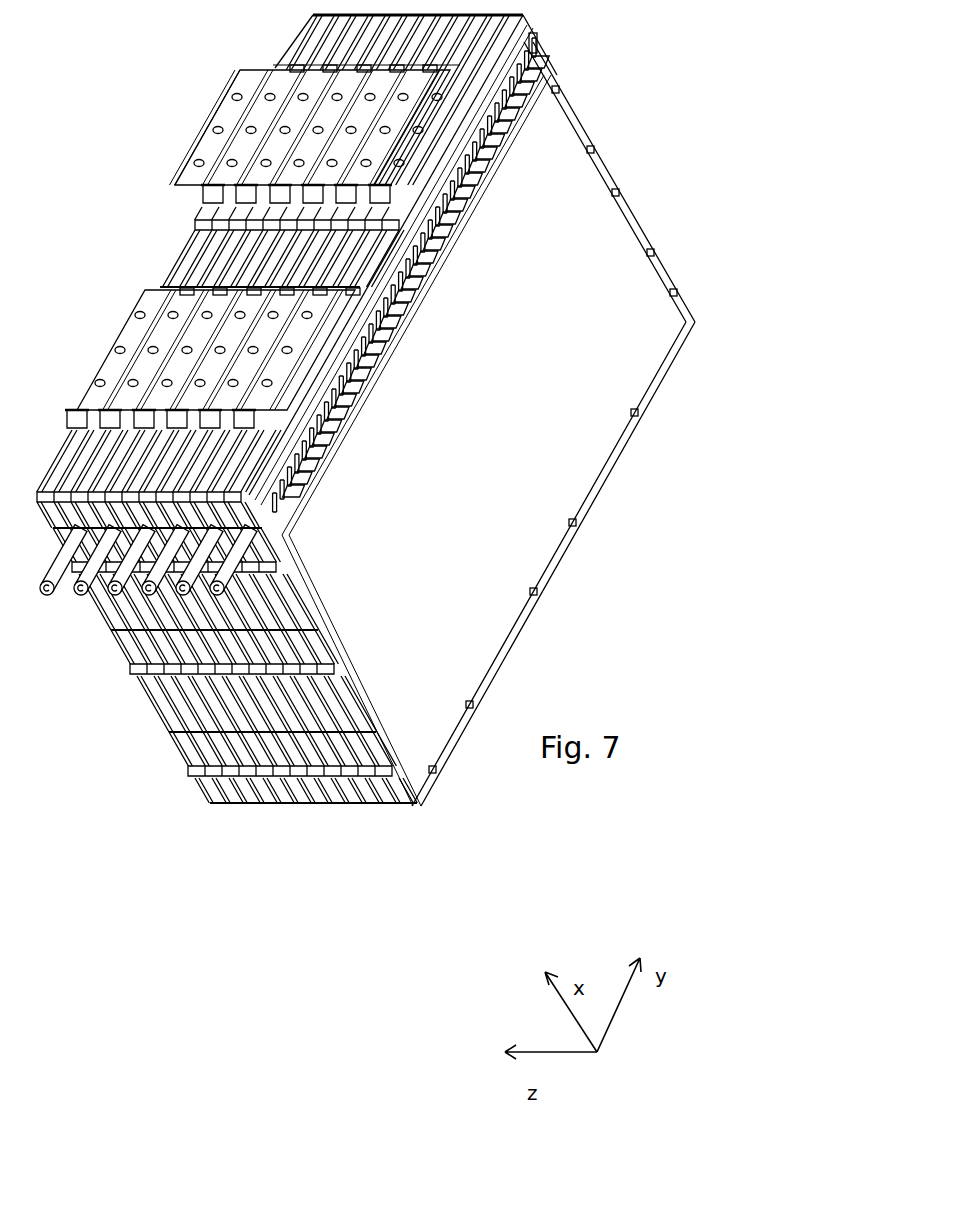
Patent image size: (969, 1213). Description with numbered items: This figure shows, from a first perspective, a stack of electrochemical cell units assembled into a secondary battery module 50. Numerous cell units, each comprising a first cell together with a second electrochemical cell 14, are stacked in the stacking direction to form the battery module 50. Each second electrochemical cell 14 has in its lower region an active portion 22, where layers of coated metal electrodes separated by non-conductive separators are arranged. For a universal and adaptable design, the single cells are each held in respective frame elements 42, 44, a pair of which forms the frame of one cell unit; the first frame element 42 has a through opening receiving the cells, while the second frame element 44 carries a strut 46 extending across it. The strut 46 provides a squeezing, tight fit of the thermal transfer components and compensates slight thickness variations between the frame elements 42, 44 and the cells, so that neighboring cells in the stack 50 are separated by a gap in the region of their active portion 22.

The second electrochemical cell 14 is at (612, 364).
The active portion 22 is at (527, 538).
The first frame element 42 is at (317, 797).
The second frame element 44 is at (335, 797).
The strut 46 is at (396, 336).
The battery module 50 is at (697, 482).